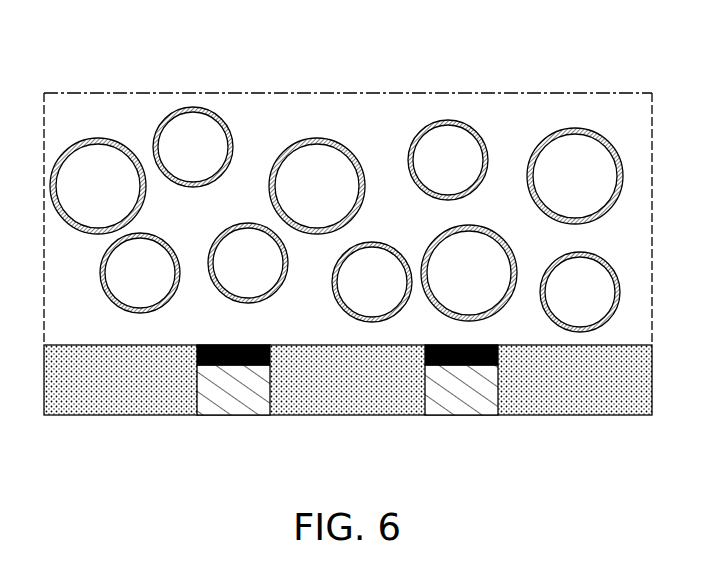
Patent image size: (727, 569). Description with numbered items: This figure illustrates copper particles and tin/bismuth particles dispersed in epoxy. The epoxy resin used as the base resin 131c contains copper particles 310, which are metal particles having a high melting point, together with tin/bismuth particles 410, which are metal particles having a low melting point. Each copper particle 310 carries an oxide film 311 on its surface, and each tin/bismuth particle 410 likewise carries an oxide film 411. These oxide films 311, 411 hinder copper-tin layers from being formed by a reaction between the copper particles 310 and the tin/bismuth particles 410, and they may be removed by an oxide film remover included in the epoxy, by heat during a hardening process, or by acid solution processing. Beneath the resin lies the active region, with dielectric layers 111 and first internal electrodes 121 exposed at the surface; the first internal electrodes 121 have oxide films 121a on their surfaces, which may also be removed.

The base resin 131c is at (518, 108).
The dielectric layer 111 is at (323, 402).
The oxide film of first internal electrode 121a is at (424, 356).
The first internal electrode 121 is at (482, 405).
The copper particle 310 is at (327, 155).
The oxide film of copper particle 311 is at (288, 146).
The tin/bismuth particle 410 is at (198, 122).
The oxide film of tin/bismuth particle 411 is at (160, 121).